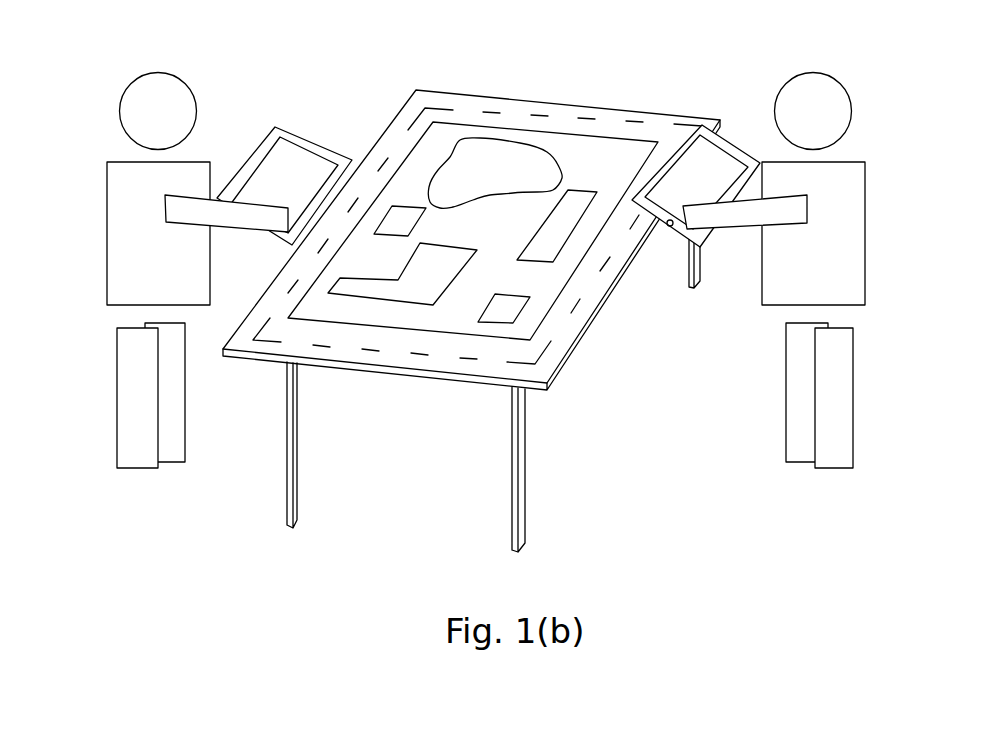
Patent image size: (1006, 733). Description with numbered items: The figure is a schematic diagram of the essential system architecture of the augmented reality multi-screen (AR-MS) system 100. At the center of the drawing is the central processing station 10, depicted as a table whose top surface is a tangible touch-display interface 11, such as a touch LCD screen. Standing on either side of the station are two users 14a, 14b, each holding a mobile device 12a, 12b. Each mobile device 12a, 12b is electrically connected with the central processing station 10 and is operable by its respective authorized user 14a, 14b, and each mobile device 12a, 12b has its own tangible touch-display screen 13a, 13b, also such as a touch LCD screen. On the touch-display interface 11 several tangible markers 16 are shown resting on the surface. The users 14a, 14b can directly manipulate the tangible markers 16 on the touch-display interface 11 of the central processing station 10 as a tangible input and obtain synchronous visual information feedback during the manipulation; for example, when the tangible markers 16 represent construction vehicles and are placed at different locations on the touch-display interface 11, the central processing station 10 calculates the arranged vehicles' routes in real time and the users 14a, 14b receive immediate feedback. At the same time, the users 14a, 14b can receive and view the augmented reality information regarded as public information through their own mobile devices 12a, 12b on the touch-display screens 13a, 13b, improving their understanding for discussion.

The augmented reality multi-screen (AR-MS) system 100 is at (512, 290).
The central processing station 10 is at (471, 290).
The touch-display interface 11 is at (537, 116).
The mobile device 12a is at (688, 153).
The mobile device 12b is at (281, 151).
The touch-display screen 13a is at (683, 147).
The touch-display screen 13b is at (316, 144).
The user 14a is at (858, 238).
The user 14b is at (112, 232).
The tangible markers 16 is at (401, 207).